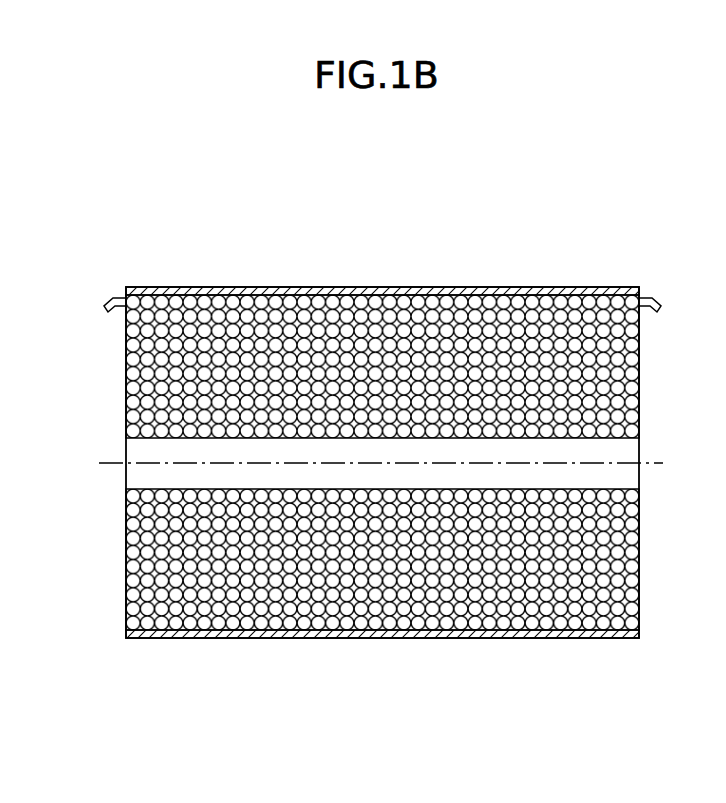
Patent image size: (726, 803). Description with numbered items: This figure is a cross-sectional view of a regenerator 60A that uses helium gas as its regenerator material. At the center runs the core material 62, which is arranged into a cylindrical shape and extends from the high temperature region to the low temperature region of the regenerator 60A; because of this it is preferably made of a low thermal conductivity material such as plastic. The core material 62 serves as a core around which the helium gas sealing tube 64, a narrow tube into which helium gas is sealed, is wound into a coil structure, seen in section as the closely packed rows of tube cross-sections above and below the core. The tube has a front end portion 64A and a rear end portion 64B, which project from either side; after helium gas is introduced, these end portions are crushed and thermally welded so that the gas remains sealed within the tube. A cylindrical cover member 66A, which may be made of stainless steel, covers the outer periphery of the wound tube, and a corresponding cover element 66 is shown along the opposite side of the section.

The regenerator 60A is at (471, 214).
The core material 62 is at (625, 448).
The helium gas sealing tube 64 is at (370, 592).
The front end portion 64A is at (648, 298).
The rear end portion 64B is at (120, 294).
The lower end cap plate 66 is at (520, 638).
The cover member 66A is at (520, 287).